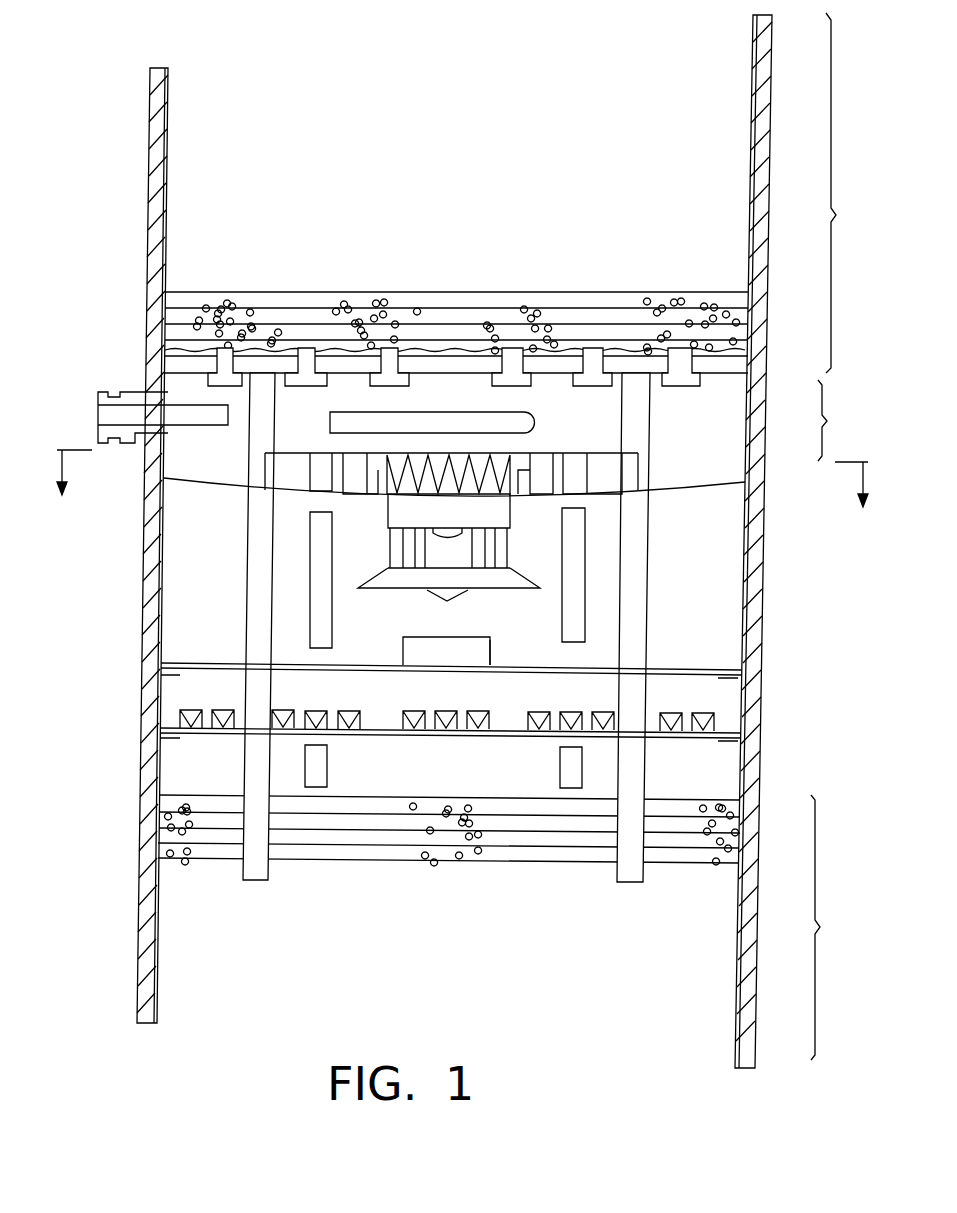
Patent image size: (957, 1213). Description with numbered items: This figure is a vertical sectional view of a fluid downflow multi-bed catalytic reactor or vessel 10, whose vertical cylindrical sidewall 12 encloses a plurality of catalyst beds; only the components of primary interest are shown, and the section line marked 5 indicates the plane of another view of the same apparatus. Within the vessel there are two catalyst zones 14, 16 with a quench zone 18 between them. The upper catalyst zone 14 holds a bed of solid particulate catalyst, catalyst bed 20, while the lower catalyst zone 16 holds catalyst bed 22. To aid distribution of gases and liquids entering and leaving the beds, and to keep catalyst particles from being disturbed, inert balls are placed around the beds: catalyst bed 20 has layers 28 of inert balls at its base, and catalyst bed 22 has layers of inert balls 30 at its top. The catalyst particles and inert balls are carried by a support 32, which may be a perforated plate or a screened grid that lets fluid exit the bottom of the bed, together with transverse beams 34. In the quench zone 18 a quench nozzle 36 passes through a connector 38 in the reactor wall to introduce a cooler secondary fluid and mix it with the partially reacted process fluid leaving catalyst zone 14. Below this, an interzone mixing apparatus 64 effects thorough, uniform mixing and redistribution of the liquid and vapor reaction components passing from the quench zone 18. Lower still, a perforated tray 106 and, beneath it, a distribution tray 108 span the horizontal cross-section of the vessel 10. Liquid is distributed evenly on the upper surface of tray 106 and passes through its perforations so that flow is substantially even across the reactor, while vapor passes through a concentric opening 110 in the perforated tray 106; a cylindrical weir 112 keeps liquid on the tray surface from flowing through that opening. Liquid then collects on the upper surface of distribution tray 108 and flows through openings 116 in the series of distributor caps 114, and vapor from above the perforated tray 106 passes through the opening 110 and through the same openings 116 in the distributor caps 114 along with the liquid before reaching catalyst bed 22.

The multi-bed catalytic reactor 10 is at (106, 111).
The vertical cylindrical sidewall 12 is at (150, 196).
The catalyst zone 14 is at (836, 215).
The catalyst zone 16 is at (820, 927).
The quench zone 18 is at (827, 421).
The catalyst bed 20 is at (452, 137).
The catalyst bed 22 is at (447, 977).
The layers of inert balls 28 is at (260, 302).
The layers of inert balls 30 is at (496, 858).
The support 32 is at (178, 357).
The transverse beams 34 is at (388, 348).
The quench nozzle 36 is at (530, 420).
The connector 38 is at (134, 392).
The interzone mixing apparatus 64 is at (369, 442).
The perforated tray 106 is at (742, 668).
The distribution tray 108 is at (742, 732).
The concentric opening 110 is at (455, 637).
The cylindrical weir 112 is at (488, 656).
The distributor caps 114 is at (226, 686).
The openings 116 is at (366, 712).
The section line 5- 5 is at (463, 500).